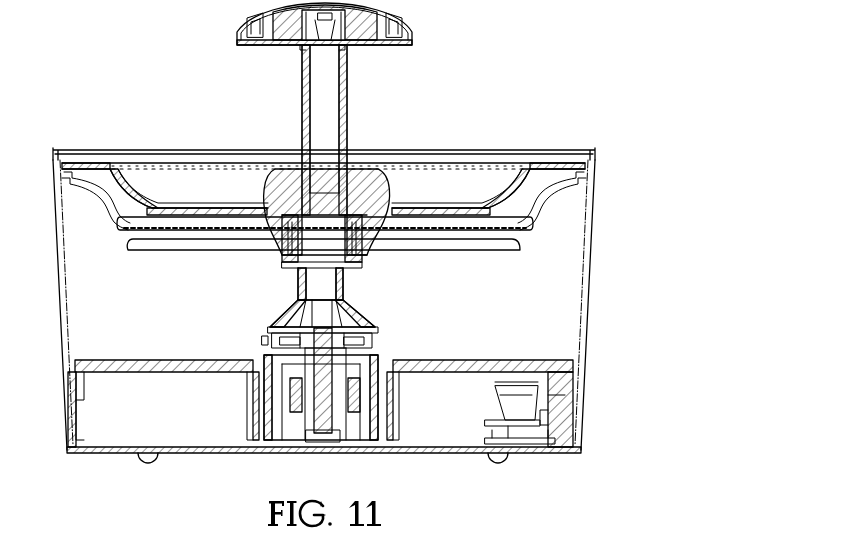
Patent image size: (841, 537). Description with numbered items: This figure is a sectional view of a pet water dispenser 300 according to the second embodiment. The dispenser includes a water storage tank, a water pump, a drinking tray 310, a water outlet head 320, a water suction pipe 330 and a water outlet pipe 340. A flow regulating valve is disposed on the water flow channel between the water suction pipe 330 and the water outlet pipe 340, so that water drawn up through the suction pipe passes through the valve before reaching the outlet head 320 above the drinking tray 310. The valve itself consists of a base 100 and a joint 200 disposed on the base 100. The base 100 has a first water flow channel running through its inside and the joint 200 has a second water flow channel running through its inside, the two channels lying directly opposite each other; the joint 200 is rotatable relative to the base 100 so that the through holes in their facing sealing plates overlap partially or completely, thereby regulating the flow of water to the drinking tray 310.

The base 100 is at (352, 286).
The joint 200 is at (298, 207).
The pet water dispenser 300 is at (590, 305).
The drinking tray 310 is at (166, 180).
The water outlet head 320 is at (408, 46).
The water suction pipe 330 is at (290, 312).
The water outlet pipe 340 is at (345, 116).